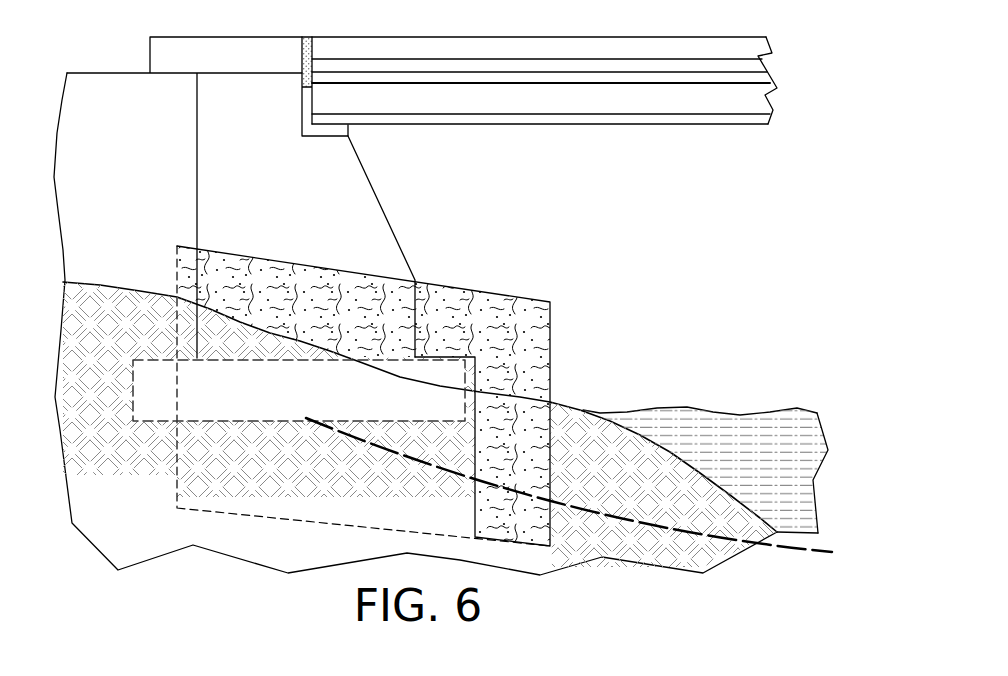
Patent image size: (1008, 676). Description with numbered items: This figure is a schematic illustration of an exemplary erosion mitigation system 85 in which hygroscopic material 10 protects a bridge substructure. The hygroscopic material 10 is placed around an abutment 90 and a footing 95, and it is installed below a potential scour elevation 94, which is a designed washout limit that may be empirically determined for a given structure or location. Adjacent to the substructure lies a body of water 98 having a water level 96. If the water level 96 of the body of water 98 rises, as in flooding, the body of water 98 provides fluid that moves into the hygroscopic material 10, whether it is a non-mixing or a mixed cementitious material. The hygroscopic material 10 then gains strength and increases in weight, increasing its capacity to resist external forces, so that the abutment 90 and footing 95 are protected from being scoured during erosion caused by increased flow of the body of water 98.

The hygroscopic material 10 is at (540, 330).
The erosion mitigation system 85 is at (654, 302).
The abutment 90 is at (340, 175).
The potential scour elevation 94 is at (565, 506).
The footing 95 is at (205, 412).
The water level 96 is at (688, 407).
The body of water 98 is at (772, 453).